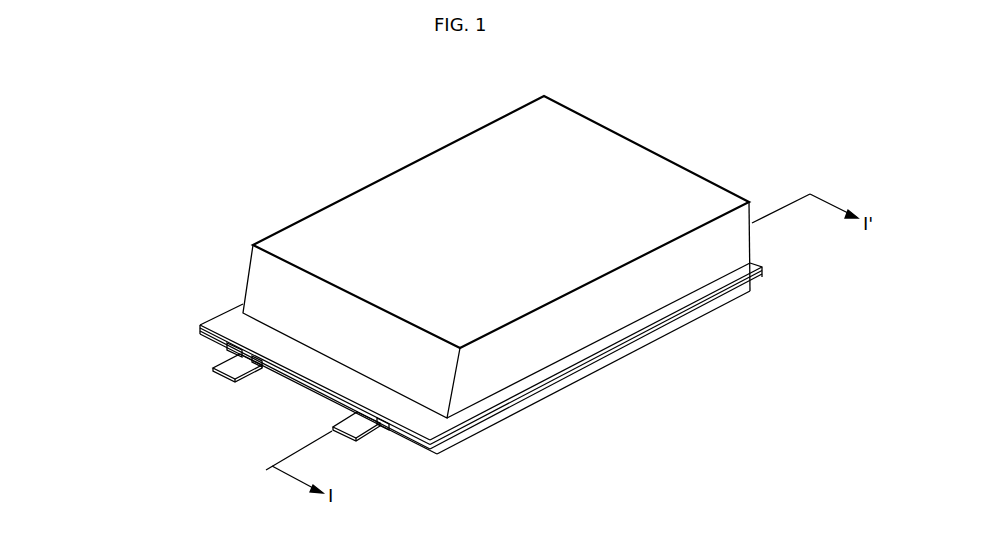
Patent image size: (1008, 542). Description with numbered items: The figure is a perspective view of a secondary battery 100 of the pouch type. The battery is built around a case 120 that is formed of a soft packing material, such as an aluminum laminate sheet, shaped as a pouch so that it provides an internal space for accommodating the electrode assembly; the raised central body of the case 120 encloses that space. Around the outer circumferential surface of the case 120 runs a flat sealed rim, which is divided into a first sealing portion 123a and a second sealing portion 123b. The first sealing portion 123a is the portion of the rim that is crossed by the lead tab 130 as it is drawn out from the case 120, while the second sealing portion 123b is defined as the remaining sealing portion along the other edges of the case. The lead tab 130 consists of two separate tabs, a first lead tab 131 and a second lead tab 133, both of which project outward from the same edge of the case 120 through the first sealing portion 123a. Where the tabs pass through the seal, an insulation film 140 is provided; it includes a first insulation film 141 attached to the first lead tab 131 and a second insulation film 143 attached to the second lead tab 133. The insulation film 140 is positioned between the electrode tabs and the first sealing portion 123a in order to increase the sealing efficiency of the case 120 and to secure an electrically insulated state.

The secondary battery 100 is at (112, 151).
The case 120 is at (628, 153).
The first sealing portion 123a is at (408, 418).
The second sealing portion 123b is at (560, 366).
The lead tab 130 is at (281, 417).
The first lead tab 131 is at (340, 423).
The second lead tab 133 is at (223, 370).
The insulation film 140 is at (230, 375).
The first insulation film 141 is at (235, 341).
The second insulation film 143 is at (371, 410).